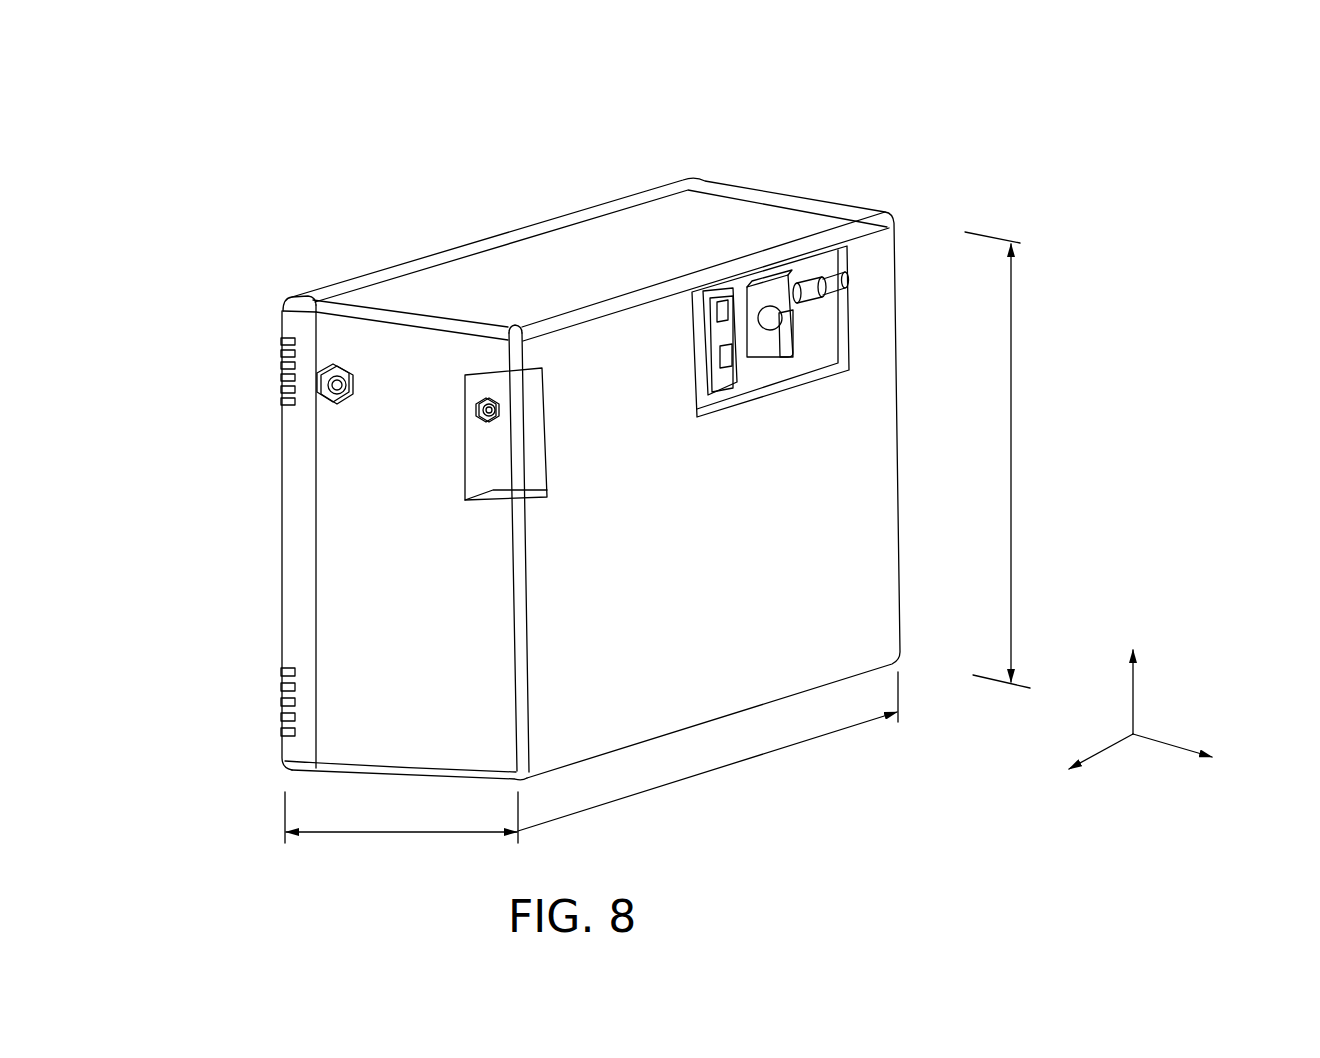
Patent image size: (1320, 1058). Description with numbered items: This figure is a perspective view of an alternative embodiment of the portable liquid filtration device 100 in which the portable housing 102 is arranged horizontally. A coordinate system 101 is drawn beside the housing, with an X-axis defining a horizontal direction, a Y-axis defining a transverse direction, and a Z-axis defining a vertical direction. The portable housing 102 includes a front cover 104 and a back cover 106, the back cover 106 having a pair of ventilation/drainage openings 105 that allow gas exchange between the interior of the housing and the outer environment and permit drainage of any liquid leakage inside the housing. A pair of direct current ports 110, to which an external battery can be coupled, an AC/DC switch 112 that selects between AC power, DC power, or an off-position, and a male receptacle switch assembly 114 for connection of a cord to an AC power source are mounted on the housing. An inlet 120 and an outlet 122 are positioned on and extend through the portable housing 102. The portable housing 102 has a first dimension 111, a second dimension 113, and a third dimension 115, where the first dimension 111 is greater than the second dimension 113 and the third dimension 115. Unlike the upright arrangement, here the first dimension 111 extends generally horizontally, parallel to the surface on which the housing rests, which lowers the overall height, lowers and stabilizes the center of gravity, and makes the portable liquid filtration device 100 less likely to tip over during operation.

The portable liquid filtration device 100 is at (912, 104).
The coordinate system 101 is at (1190, 668).
The portable housing 102 is at (907, 170).
The front cover 104 is at (405, 262).
The ventilation/drainage openings 105 is at (280, 380).
The back cover 106 is at (860, 620).
The direct current (DC) ports 110 is at (821, 280).
The first dimension 111 is at (732, 763).
The AC/DC switch 112 is at (760, 292).
The second dimension 113 is at (403, 833).
The male receptacle switch assembly 114 is at (697, 333).
The third dimension 115 is at (1011, 462).
The inlet 120 is at (482, 408).
The outlet 122 is at (327, 365).